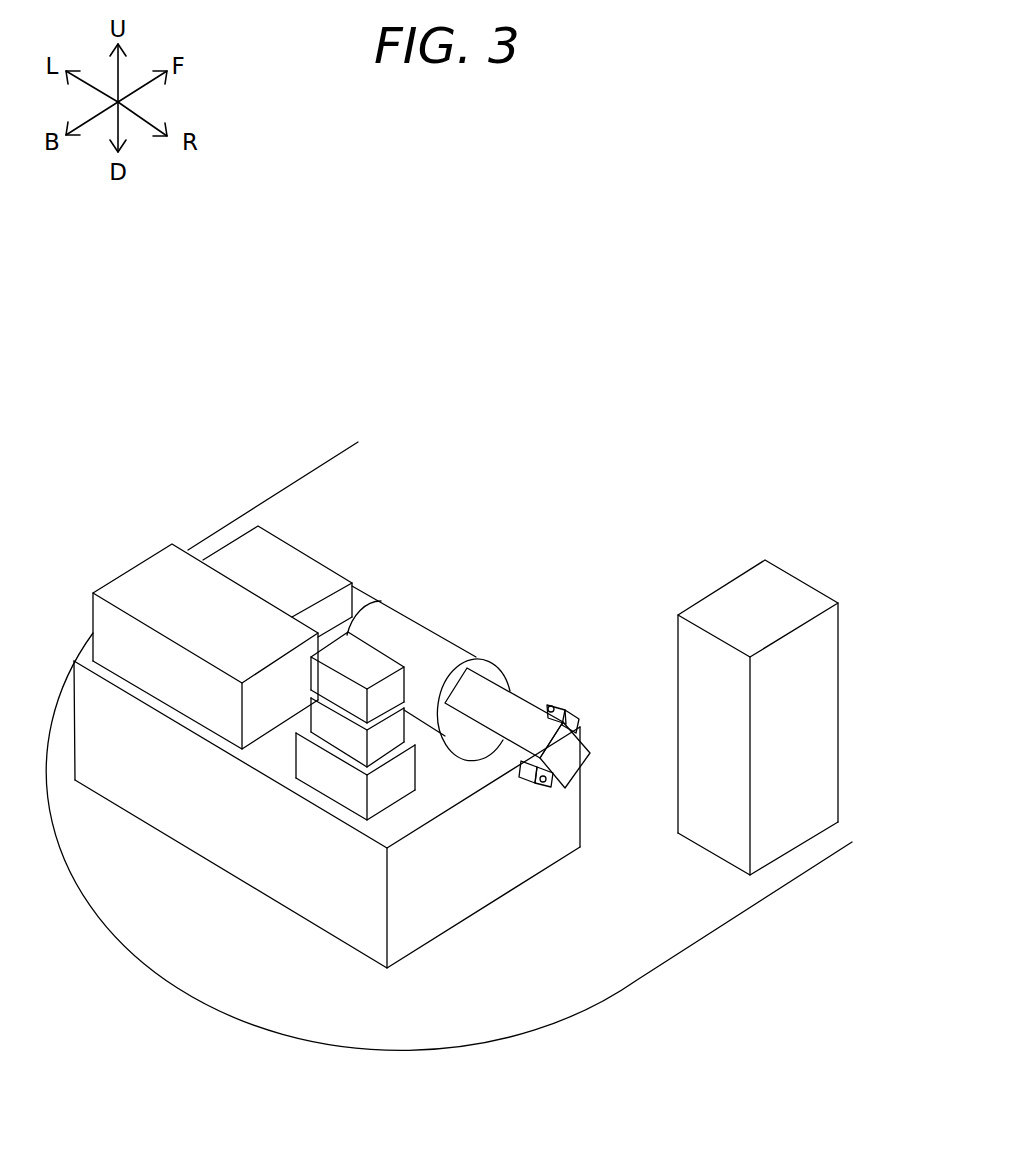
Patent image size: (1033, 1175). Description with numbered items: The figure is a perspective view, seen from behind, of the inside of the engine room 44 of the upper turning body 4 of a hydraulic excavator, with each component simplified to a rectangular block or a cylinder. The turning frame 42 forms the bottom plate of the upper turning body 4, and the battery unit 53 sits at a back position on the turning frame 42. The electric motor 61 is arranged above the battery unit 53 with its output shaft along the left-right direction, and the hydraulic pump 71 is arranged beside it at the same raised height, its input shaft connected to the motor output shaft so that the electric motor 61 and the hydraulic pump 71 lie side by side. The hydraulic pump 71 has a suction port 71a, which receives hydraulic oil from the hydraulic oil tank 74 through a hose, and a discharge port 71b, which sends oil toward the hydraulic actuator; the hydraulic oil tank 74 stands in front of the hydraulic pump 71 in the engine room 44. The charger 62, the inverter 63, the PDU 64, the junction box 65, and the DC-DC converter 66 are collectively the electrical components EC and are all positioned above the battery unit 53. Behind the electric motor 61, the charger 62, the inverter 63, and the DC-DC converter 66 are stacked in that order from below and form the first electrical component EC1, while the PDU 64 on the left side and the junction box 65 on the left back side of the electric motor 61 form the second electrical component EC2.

The upper turning body 4 is at (154, 397).
The turning frame 42 is at (580, 960).
The engine room 44 is at (577, 503).
The battery unit 53 is at (188, 803).
The electric motor 61 is at (443, 650).
The charger 62 is at (383, 788).
The inverter 63 is at (330, 730).
The PDU 64 is at (265, 558).
The junction box 65 is at (153, 583).
The DC-DC converter 66 is at (368, 660).
The hydraulic pump 71 is at (515, 720).
The suction port 71a is at (543, 787).
The discharge port 71b is at (550, 708).
The hydraulic oil tank 74 is at (735, 605).
The electrical components EC is at (346, 552).
The first electrical component EC1 is at (356, 809).
The second electrical component EC2 is at (216, 574).